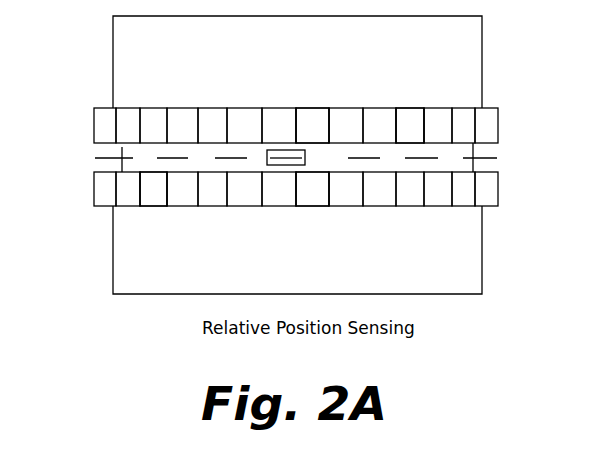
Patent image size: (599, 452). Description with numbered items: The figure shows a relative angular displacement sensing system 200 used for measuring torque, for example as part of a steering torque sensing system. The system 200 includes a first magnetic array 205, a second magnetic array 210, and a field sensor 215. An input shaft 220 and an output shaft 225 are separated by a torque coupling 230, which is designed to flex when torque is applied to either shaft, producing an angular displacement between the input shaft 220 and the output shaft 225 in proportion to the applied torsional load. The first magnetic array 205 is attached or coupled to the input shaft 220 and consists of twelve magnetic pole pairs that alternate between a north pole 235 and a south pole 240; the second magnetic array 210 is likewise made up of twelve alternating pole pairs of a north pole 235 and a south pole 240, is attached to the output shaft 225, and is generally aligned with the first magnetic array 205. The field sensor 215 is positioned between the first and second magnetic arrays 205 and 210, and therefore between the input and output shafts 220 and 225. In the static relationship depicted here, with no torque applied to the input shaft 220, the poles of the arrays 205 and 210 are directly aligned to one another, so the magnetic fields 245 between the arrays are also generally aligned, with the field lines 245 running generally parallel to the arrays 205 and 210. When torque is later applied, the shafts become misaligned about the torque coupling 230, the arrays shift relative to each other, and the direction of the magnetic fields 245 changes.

The relative angular displacement sensing system 200 is at (292, 155).
The first magnetic array 205 is at (510, 123).
The second magnetic array 210 is at (514, 189).
The field sensor 215 is at (268, 163).
The input shaft 220 is at (309, 67).
The output shaft 225 is at (302, 292).
The torque coupling 230 is at (474, 149).
The north pole 235 is at (410, 109).
The south pole 240 is at (319, 111).
The magnetic fields 245 is at (172, 158).